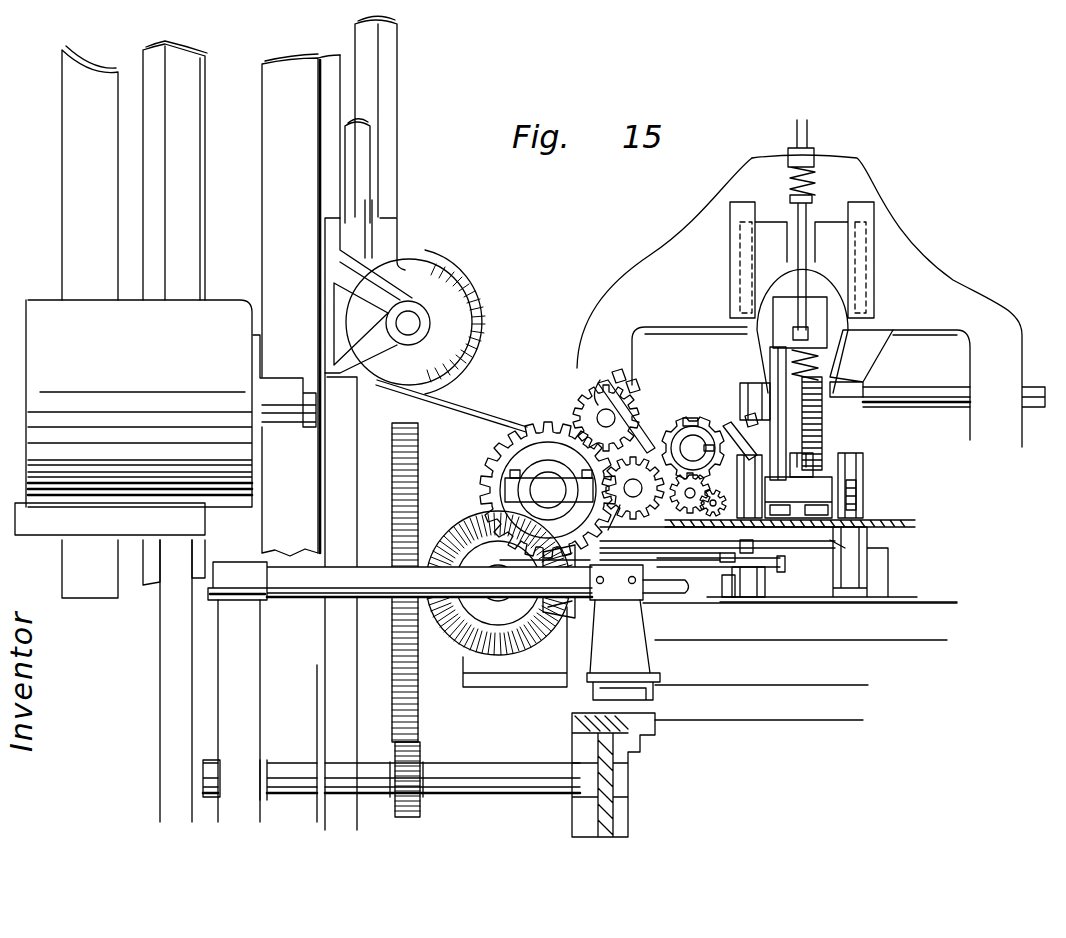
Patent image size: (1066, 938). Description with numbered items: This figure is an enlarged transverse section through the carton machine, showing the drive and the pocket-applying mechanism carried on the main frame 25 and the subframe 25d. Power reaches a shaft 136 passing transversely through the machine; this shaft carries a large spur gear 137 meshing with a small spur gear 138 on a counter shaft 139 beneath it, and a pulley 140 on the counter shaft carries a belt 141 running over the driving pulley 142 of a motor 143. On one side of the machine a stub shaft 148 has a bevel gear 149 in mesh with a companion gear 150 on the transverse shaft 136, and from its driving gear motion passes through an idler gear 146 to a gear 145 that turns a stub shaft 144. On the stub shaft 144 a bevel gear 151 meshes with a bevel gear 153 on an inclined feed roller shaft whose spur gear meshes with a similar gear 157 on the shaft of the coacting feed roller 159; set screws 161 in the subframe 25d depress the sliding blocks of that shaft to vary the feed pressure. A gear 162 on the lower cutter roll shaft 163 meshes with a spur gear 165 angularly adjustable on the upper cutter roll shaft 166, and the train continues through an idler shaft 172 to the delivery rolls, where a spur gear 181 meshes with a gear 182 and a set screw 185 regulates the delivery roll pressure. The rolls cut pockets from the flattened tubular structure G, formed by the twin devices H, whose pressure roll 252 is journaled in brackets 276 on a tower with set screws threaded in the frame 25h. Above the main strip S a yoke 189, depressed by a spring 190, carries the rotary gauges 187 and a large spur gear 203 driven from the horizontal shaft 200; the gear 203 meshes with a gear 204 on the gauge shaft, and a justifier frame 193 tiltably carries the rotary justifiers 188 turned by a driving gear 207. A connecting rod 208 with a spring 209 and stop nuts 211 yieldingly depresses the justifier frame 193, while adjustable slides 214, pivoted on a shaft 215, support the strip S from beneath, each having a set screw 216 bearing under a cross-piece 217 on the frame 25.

The frame 25h is at (75, 130).
The twin devices H is at (413, 90).
The motor 143 is at (205, 318).
The driving pulley 142 is at (312, 435).
The pressure roll 252 is at (470, 305).
The brackets 276 is at (380, 295).
The tubular structure G is at (470, 404).
The large spur gear 137 is at (420, 716).
The small spur gear 138 is at (425, 808).
The shaft 136 is at (302, 584).
The belt 141 is at (336, 641).
The pulley 140 is at (318, 707).
The counter shaft 139 is at (470, 778).
The stub shaft 148 is at (480, 600).
The bevel gear 149 is at (465, 520).
The idler gear 146 is at (490, 450).
The bevel gear 151 is at (580, 512).
The companion gear 150 is at (598, 618).
The bevel gear 153 is at (582, 422).
The spur gear 157 is at (590, 390).
The set screws 161 is at (620, 378).
The stub shaft 144 is at (660, 512).
The gear 145 is at (618, 525).
The idler shaft 172 is at (710, 518).
The shaft 166 is at (695, 446).
The spur gear 165 is at (700, 412).
The feed roller 159 is at (640, 440).
The subframe 25d is at (890, 240).
The spring 190 is at (815, 180).
The yoke 189 is at (830, 306).
The stop nuts 211 is at (740, 330).
The connecting rod 208 is at (775, 360).
The spring 209 is at (830, 360).
The horizontal shaft 200 is at (915, 395).
The large spur gear 203 is at (770, 420).
The set screw 185 is at (824, 435).
The gear 204 is at (815, 458).
The rotary gauges 187 is at (863, 458).
The justifier frame 193 is at (835, 478).
The rotary justifiers 188 is at (855, 500).
The driving gear 207 is at (799, 512).
The main strip S is at (905, 512).
The adjustable slides 214 is at (860, 548).
The spur gear 181 is at (717, 536).
The cross-piece 217 is at (822, 540).
The gear 162 is at (668, 548).
The shaft 163 is at (730, 548).
The shaft 215 is at (770, 568).
The set screw 216 is at (758, 598).
The gear 182 is at (728, 600).
The frame 25 is at (630, 820).